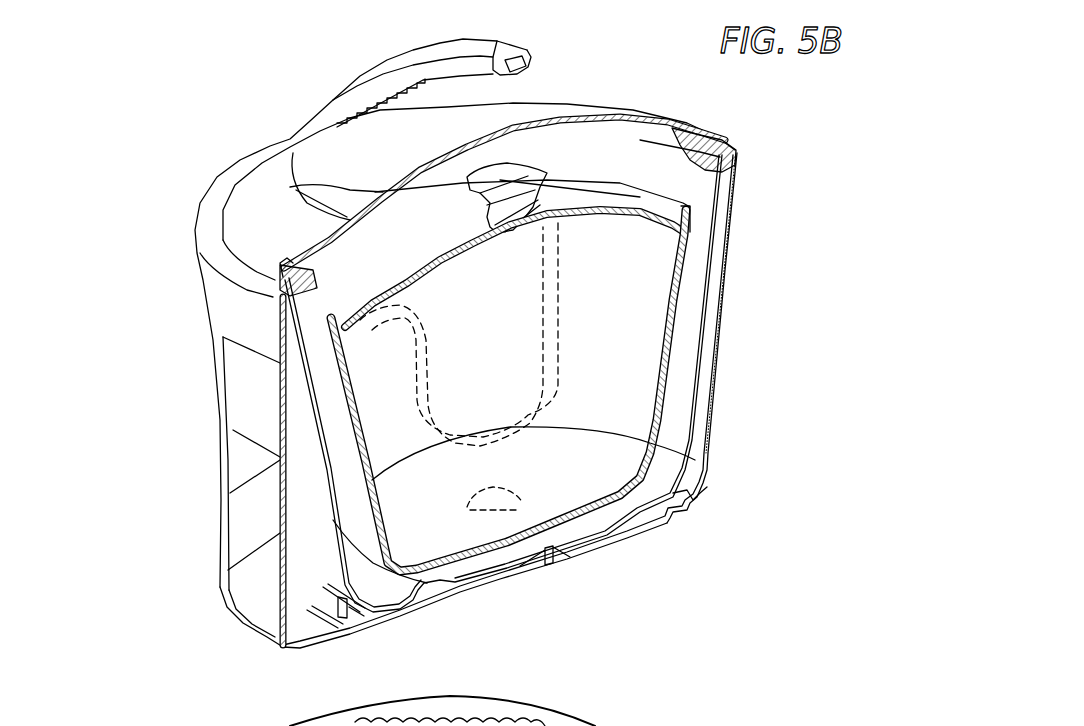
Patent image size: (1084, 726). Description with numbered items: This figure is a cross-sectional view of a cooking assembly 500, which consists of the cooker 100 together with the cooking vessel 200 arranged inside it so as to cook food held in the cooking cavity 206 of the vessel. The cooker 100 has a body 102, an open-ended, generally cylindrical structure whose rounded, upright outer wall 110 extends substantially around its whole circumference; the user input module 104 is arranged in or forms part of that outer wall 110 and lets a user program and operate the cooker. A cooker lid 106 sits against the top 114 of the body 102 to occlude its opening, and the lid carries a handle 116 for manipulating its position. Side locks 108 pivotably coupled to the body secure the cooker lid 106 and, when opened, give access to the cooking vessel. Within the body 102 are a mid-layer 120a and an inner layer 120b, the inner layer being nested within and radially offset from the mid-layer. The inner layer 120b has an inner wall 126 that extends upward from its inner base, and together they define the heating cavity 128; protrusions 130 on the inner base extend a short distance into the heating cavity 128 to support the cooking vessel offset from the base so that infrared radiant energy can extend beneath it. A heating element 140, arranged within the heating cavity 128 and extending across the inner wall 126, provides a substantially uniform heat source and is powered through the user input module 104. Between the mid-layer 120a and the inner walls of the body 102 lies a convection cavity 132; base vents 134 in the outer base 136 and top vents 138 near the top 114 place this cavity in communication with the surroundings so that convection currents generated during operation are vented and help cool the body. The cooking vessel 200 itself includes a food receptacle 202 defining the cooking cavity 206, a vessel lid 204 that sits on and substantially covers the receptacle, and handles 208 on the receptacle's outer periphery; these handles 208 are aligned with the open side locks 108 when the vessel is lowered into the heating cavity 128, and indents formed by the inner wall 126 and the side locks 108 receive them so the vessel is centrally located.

The cooker 100 is at (206, 372).
The body 102 is at (728, 423).
The user input module 104 is at (236, 504).
The cooker lid 106 is at (268, 213).
The side locks 108 is at (370, 135).
The outer wall 110 is at (718, 383).
The top 114 is at (218, 248).
The handle 116 is at (497, 50).
The mid-layer 120a is at (710, 330).
The inner layer 120b is at (702, 357).
The inner wall 126 is at (750, 180).
The heating cavity 128 is at (700, 295).
The protrusions 130 is at (430, 572).
The convection cavity 132 is at (703, 432).
The base vents 134 is at (331, 620).
The outer base 136 is at (380, 633).
The top vents 138 is at (738, 172).
The heating element 140 is at (560, 352).
The cooking vessel 200 is at (561, 197).
The food receptacle 202 is at (680, 270).
The vessel lid 204 is at (610, 210).
The cooking cavity 206 is at (567, 443).
The handles 208 is at (323, 185).
The cooking assembly 500 is at (155, 201).